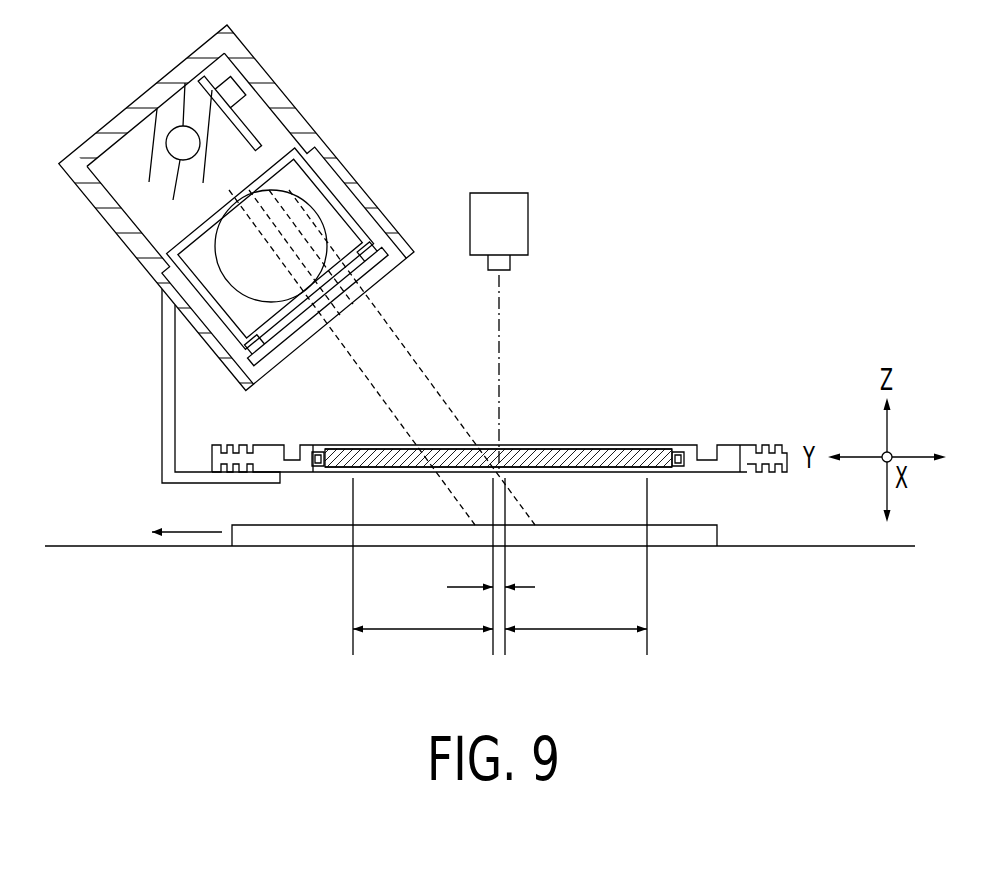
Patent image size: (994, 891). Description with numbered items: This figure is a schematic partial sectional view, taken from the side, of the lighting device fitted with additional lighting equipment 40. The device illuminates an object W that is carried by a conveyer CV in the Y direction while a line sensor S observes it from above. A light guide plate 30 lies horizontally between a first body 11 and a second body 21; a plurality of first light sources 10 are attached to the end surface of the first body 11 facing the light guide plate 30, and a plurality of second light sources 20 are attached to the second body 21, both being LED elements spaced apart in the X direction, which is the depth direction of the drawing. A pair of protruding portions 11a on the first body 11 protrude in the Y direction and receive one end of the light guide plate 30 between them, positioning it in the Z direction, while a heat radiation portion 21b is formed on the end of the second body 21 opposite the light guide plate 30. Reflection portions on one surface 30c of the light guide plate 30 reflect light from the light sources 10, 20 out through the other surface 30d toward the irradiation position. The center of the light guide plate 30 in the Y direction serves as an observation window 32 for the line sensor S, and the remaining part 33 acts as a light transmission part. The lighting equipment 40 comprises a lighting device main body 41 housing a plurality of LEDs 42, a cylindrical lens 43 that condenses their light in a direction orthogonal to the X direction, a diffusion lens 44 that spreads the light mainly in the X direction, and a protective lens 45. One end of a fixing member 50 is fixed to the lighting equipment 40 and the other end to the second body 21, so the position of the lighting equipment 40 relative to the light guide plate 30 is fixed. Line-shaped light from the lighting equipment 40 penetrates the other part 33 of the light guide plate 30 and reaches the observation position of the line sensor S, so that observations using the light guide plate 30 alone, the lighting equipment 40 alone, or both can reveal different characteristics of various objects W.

The lighting equipment 40 is at (303, 103).
The lighting device main body 41 is at (90, 200).
The LEDs 42 is at (203, 218).
The cylindrical lens 43 is at (332, 177).
The diffusion lens 44 is at (232, 300).
The protective lens 45 is at (300, 345).
The fixing member 50 is at (167, 407).
The second light sources 20 is at (313, 463).
The second body 21 is at (268, 462).
The heat radiation portion 21b is at (240, 443).
The first light sources 10 is at (683, 462).
The first body 11 is at (728, 443).
The protruding portions 11a is at (768, 443).
The light guide plate 30 is at (612, 447).
The one surface of the light guide plate 30c is at (557, 447).
The other surface of the light guide plate 30d is at (575, 467).
The observation window 32 is at (491, 566).
The other part 33 is at (500, 566).
The line sensor S is at (530, 220).
The object W is at (720, 532).
The conveyer CV is at (87, 545).